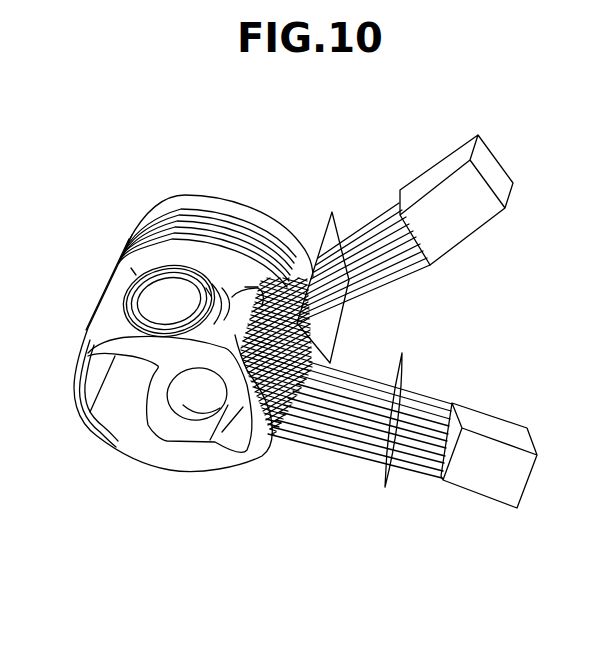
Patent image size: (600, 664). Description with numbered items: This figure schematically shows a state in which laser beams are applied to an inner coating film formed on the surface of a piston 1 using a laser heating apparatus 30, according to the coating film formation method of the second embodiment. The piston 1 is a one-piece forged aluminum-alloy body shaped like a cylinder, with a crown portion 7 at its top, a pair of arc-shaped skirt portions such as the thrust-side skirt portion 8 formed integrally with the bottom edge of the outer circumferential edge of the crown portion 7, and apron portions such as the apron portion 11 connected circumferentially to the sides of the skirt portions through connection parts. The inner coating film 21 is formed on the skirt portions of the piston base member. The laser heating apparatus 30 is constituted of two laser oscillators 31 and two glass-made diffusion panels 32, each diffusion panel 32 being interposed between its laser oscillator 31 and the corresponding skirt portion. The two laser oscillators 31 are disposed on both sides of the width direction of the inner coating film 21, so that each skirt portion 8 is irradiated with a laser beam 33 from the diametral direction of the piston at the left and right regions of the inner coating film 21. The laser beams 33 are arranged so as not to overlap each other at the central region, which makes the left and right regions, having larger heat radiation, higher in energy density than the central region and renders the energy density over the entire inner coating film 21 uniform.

The piston 1 is at (84, 301).
The crown portion 7 is at (205, 207).
The thrust-side skirt portion 8 is at (250, 410).
The apron portion 11 is at (98, 323).
The inner coating film 21 is at (243, 365).
The laser heating apparatus 30 is at (402, 351).
The laser oscillator 31 is at (458, 157).
The diffusion panel 32 is at (336, 212).
The laser beam 33 is at (379, 208).